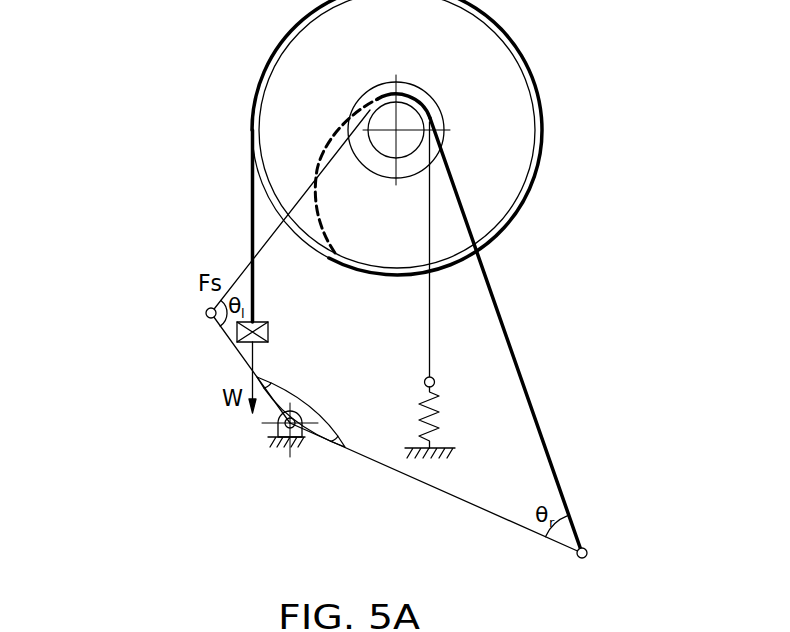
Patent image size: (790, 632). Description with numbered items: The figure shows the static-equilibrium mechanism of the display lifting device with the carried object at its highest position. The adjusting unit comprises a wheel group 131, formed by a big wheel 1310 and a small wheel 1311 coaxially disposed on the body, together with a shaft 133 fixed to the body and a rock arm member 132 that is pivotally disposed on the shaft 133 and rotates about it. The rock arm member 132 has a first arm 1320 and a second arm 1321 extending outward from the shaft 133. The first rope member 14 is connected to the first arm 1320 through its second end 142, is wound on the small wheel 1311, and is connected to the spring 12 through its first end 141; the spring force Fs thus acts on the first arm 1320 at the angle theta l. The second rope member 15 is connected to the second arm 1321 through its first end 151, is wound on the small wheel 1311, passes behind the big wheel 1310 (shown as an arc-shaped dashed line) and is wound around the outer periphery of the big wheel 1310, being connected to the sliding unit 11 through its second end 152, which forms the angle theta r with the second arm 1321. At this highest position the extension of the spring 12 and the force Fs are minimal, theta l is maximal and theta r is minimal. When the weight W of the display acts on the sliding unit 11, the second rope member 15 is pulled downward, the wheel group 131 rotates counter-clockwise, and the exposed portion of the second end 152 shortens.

The wheel group 131 is at (640, 66).
The big wheel 1310 is at (510, 90).
The small wheel 1311 is at (417, 120).
The second rope member 15 is at (252, 203).
The first end of the second rope member 151 is at (254, 295).
The second end of the second rope member 152 is at (512, 341).
The sliding unit 11 is at (268, 332).
The first rope member 14 is at (431, 352).
The first end of the first rope member 141 is at (435, 378).
The second end of the first rope member 142 is at (250, 263).
The spring 12 is at (441, 413).
The rock arm member 132 is at (118, 487).
The first arm 1320 is at (236, 352).
The second arm 1321 is at (377, 463).
The shaft 133 is at (298, 411).